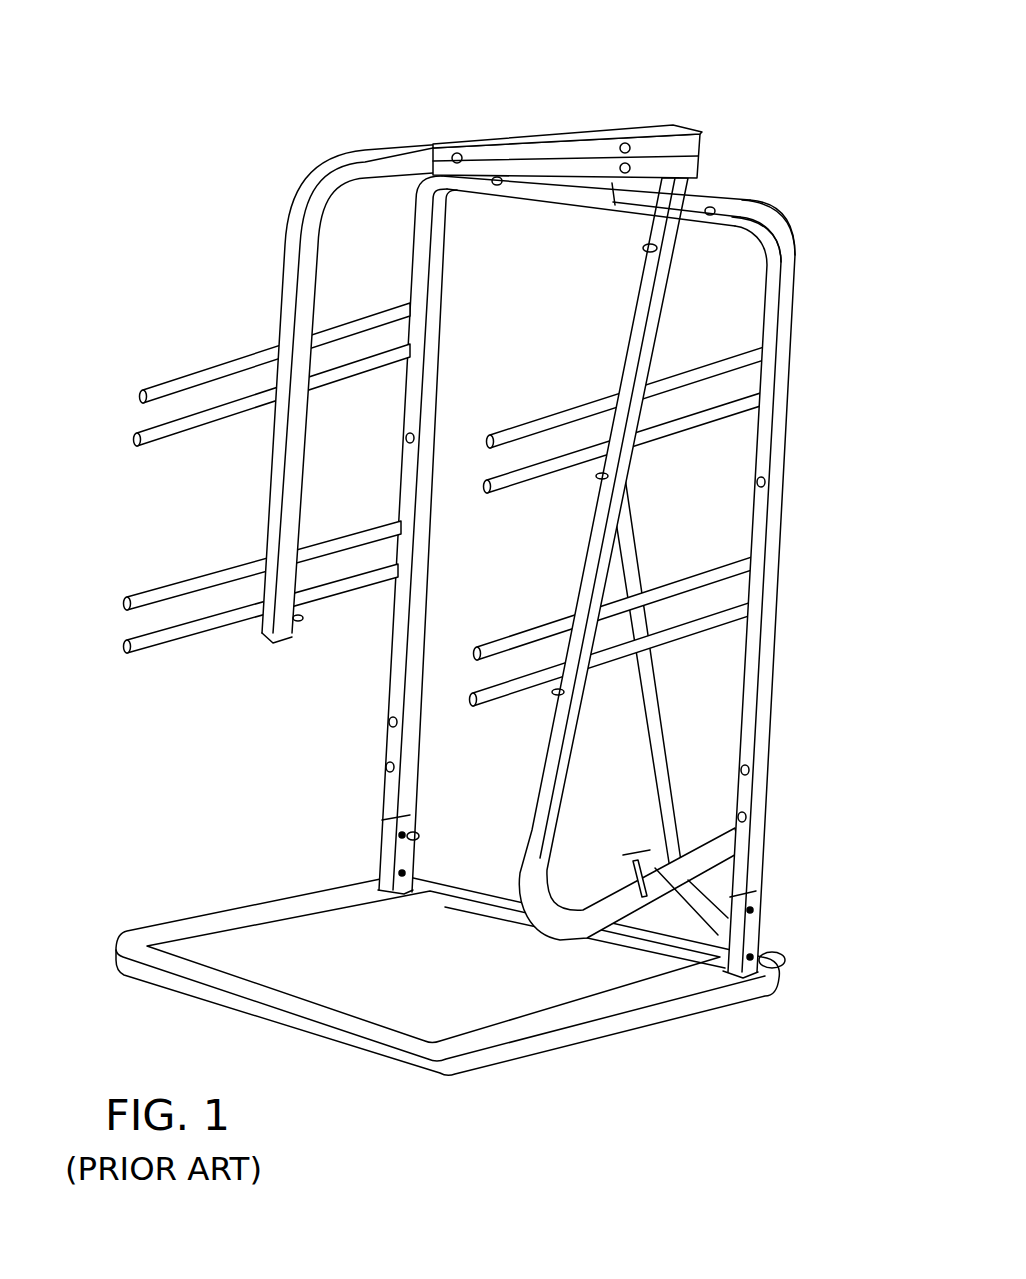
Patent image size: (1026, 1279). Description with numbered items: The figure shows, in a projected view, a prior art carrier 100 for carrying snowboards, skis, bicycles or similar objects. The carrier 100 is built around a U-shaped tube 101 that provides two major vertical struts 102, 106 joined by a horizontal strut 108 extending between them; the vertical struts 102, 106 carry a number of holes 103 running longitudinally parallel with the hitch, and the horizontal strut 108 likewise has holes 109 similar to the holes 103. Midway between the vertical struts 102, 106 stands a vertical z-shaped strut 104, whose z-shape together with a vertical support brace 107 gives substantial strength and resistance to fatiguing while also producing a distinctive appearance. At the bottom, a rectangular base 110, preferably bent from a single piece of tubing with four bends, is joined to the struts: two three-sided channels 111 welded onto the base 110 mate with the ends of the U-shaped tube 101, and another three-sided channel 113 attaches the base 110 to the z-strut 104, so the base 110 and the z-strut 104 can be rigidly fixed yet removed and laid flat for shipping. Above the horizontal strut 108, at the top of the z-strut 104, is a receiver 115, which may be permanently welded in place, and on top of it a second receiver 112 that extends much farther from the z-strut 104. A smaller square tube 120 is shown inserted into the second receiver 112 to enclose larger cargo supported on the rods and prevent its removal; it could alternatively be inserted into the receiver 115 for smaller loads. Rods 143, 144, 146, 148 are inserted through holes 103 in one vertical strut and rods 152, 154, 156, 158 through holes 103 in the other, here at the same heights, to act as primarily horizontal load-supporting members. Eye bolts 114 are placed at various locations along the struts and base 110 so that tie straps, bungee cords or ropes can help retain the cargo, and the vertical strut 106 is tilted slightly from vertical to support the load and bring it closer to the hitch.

The carrier 100 is at (155, 52).
The U-shaped tube 101 is at (790, 264).
The vertical strut 102 is at (440, 317).
The holes 103 is at (392, 721).
The z-shaped strut 104 is at (632, 332).
The vertical strut 106 is at (768, 673).
The vertical support brace 107 is at (638, 582).
The horizontal strut 108 is at (760, 230).
The holes 109 is at (735, 206).
The rectangular base 110 is at (598, 1032).
The three-sided channels 111 is at (382, 857).
The second receiver 112 is at (600, 131).
The three-sided channel 113 is at (595, 193).
The eye bolts 114 is at (597, 476).
The receiver 115 is at (683, 168).
The square tube 120 is at (348, 151).
The rod 143 is at (133, 647).
The rod 144 is at (130, 602).
The rod 146 is at (145, 438).
The rod 148 is at (157, 387).
The rod 152 is at (783, 602).
The rod 154 is at (779, 568).
The rod 156 is at (787, 395).
The rod 158 is at (789, 349).